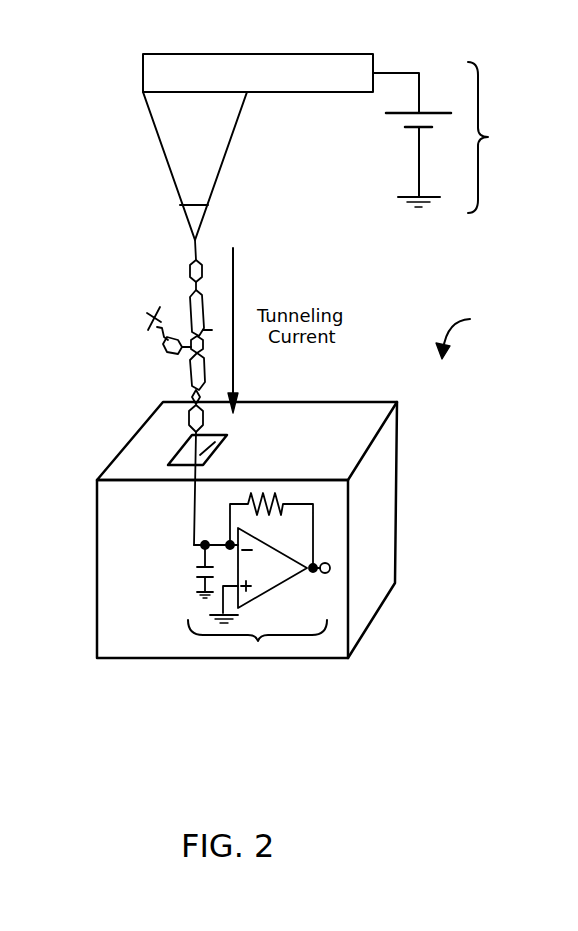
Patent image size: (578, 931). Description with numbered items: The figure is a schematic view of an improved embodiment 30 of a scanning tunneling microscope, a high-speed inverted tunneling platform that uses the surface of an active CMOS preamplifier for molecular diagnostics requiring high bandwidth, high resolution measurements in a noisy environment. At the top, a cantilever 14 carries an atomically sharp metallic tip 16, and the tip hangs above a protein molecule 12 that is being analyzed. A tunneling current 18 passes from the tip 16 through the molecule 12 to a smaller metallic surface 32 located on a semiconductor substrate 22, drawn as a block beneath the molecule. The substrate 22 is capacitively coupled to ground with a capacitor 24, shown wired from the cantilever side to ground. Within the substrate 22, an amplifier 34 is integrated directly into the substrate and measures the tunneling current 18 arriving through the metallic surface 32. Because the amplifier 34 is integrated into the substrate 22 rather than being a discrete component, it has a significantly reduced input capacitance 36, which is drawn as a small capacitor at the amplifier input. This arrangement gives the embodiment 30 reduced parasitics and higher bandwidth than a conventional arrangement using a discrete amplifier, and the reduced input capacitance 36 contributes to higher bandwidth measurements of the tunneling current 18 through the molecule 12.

The protein molecule 12 is at (203, 368).
The cantilever 14 is at (174, 84).
The atomically sharp metallic tip 16 is at (197, 223).
The tunneling current 18 is at (233, 298).
The semiconductor substrate 22 is at (133, 514).
The capacitor 24 is at (487, 127).
The improved embodiment of an STM 30 is at (469, 333).
The smaller metallic surface 32 is at (227, 438).
The amplifier 34 is at (258, 641).
The input capacitance 36 is at (196, 573).